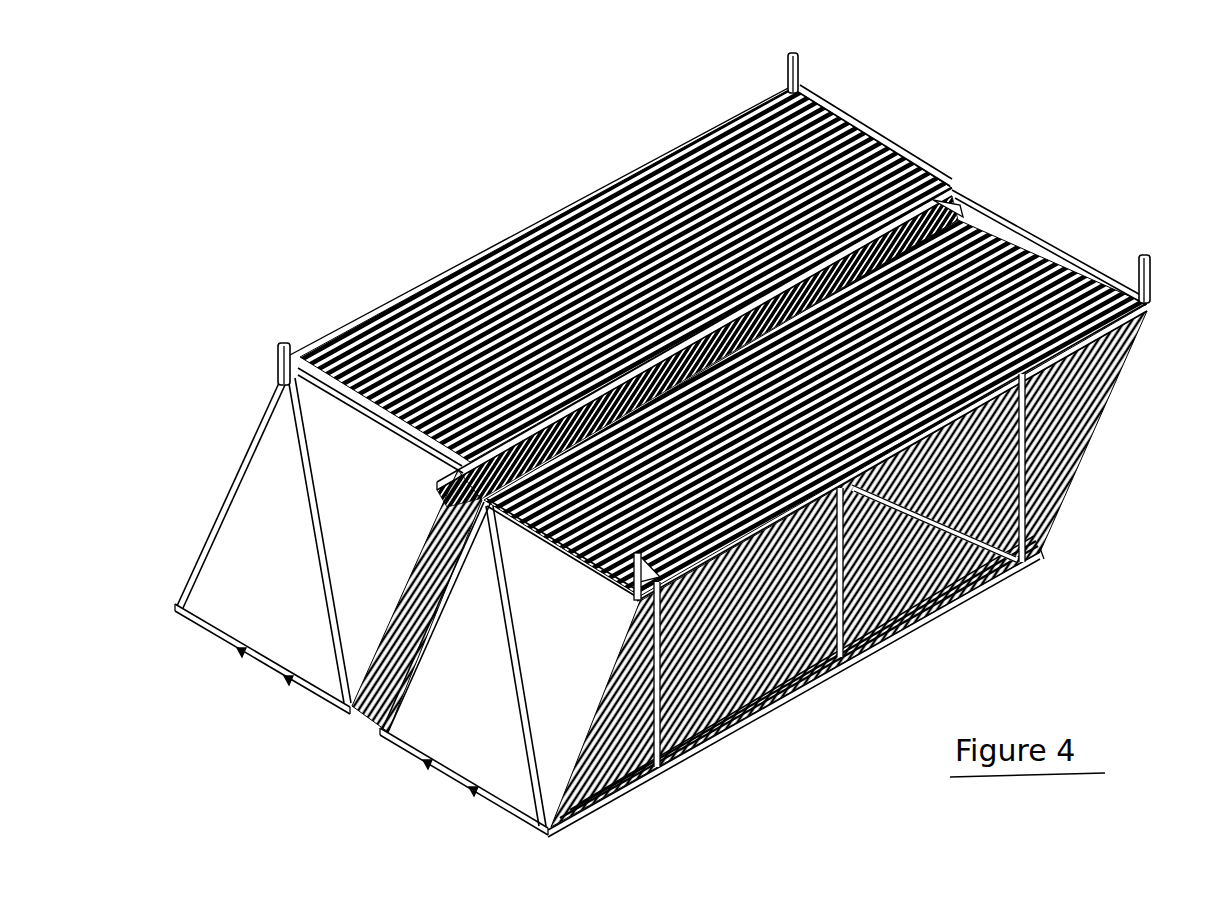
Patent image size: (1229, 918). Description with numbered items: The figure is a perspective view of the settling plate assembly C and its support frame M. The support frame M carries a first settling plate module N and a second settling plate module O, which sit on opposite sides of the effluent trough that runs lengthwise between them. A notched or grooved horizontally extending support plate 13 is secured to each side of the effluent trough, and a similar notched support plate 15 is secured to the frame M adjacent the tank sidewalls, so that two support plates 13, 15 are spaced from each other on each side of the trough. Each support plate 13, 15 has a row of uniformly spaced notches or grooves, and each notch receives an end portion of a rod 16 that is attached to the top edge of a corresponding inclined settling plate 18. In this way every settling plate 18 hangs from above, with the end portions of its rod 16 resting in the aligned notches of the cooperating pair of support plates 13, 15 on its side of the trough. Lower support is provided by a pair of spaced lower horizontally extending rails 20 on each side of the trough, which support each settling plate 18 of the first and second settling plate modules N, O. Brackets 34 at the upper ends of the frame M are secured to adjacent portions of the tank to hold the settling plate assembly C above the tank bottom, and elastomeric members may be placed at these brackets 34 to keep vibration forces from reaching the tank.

The support plate 13 is at (427, 483).
The support plate 15 is at (277, 392).
The rod 16 is at (290, 350).
The inclined settling plate 18 is at (616, 588).
The lower horizontally extending rail 20 is at (187, 623).
The bracket 34 is at (281, 323).
The settling plate assembly C is at (504, 191).
The first settling plate module N is at (696, 108).
The second settling plate module O is at (1008, 218).
The support frame M is at (952, 635).